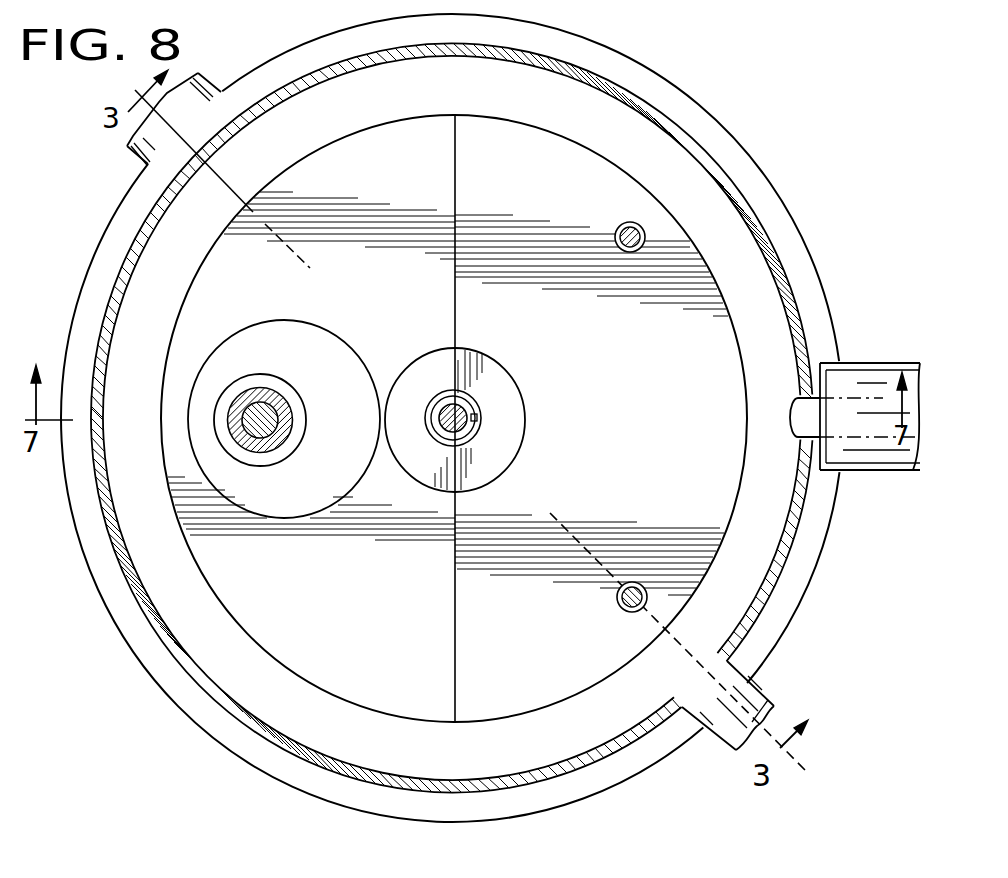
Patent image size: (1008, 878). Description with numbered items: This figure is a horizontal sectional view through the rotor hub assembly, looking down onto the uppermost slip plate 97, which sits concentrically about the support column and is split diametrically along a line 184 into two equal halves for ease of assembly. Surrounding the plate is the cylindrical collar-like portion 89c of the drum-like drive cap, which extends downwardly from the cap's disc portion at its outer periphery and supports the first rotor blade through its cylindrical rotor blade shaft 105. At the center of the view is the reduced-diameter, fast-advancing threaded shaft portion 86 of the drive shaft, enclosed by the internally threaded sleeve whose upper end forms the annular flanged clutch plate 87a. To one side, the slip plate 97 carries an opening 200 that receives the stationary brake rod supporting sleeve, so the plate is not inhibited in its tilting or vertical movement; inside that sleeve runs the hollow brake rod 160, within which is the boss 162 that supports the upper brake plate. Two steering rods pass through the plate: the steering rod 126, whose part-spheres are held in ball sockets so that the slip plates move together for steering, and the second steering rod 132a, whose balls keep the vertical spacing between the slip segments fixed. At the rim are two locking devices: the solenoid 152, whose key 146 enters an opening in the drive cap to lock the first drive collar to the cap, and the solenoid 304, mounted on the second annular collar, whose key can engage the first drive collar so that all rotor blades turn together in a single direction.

The cylindrical collar-like portion 89c is at (553, 58).
The slip plate 97 is at (573, 138).
The line 184 is at (455, 187).
The solenoid 304 is at (137, 160).
The cylindrical rotor blade shaft 105 is at (773, 700).
The solenoid 152 is at (873, 363).
The key 146 is at (792, 417).
The openings 200 is at (345, 495).
The hollow brake rod 160 is at (287, 397).
The boss 162 is at (267, 403).
The annular flanged clutch plate 87a is at (525, 415).
The threaded shaft portion 86 is at (460, 405).
The second steering rod 132a is at (615, 232).
The steering rod 126 is at (625, 607).